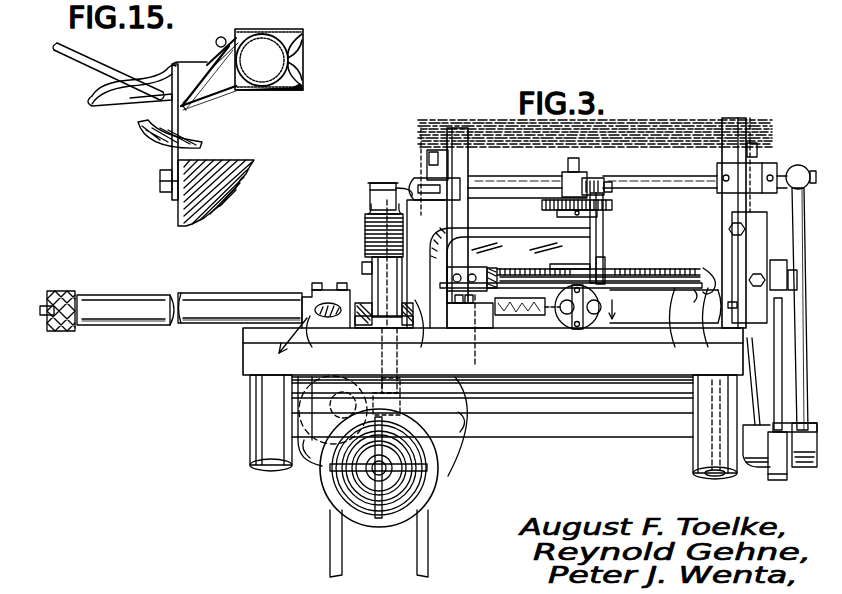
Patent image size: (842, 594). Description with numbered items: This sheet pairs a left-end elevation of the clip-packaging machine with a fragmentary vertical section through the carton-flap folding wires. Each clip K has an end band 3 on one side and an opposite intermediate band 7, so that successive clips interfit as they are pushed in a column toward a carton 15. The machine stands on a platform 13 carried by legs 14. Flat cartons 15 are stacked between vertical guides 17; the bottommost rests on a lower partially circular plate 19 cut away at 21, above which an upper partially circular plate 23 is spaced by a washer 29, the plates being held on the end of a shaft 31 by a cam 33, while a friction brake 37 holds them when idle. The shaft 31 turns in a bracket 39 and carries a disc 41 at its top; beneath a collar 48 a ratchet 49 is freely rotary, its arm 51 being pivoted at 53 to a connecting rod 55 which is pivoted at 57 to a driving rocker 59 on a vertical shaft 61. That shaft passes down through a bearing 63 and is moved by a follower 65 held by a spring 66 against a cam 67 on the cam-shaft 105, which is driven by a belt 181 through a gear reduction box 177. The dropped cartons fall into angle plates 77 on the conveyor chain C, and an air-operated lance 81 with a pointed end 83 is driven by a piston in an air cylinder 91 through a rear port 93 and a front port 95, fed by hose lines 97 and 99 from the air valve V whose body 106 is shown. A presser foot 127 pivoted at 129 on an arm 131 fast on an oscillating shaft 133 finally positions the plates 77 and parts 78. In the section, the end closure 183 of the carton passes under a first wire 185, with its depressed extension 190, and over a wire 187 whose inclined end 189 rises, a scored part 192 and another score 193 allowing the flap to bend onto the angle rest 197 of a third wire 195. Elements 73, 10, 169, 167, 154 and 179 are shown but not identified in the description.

In FIG. 15, the clip K is at (274, 36).
In FIG. 15, the intermediate band 7 is at (262, 60).
In FIG. 15, the end band 3 is at (300, 60).
In FIG. 15, the carton 15 is at (296, 91).
In FIG. 3, the carton 15 is at (680, 118).
In FIG. 15, the end closure 183 is at (233, 40).
In FIG. 15, the angle rest 197 is at (216, 40).
In FIG. 15, the depressed extension 190 is at (199, 95).
In FIG. 15, the score 193 is at (238, 90).
In FIG. 15, the first wire 185 is at (85, 63).
In FIG. 15, the inclined end 189 is at (156, 72).
In FIG. 15, the wire 187 is at (96, 102).
In FIG. 15, the third wire 195 is at (150, 104).
In FIG. 15, the scored part 192 is at (180, 110).
In FIG. 15, the platform 13 is at (216, 186).
In FIG. 3, the platform 13 is at (252, 338).
In FIG. 3, the vertical guides 17 is at (458, 136).
In FIG. 3, the pivot 57 is at (426, 175).
In FIG. 3, the driving rocker 59 is at (416, 184).
In FIG. 3, the vertical shaft 61 is at (383, 182).
In FIG. 3, the spring 66 is at (365, 228).
In FIG. 3, the bearing 63 is at (376, 287).
In FIG. 3, the bracket 39 is at (449, 241).
In FIG. 3, the friction brake 37 is at (487, 270).
In FIG. 3, the connecting rod 55 is at (498, 189).
In FIG. 3, the shaft 73 is at (663, 176).
In FIG. 3, the shaft 31 is at (572, 158).
In FIG. 3, the collar 48 is at (564, 178).
In FIG. 3, the pivot 53 is at (598, 178).
In FIG. 3, the arm 51 is at (610, 190).
In FIG. 3, the ratchet 49 is at (545, 206).
In FIG. 3, the disc 41 is at (604, 206).
In FIG. 3, the upper partially circular plate 23 is at (672, 269).
In FIG. 3, the cut-away portion 21 is at (648, 277).
In FIG. 3, the cam 33 is at (604, 281).
In FIG. 3, the washer 29 is at (605, 268).
In FIG. 3, the lower partially circular plate 19 is at (708, 274).
In FIG. 3, the valve body 106 is at (556, 320).
In FIG. 3, the section line 10 is at (530, 323).
In FIG. 3, the lever 169 is at (792, 232).
In FIG. 3, the link 167 is at (786, 280).
In FIG. 3, the arm 131 is at (800, 470).
In FIG. 3, the pivot 129 is at (770, 479).
In FIG. 3, the link 154 is at (795, 378).
In FIG. 3, the part 78 is at (670, 330).
In FIG. 3, the presser foot 127 is at (702, 330).
In FIG. 3, the air-operated lance 81 is at (332, 284).
In FIG. 3, the hose line 99 is at (314, 304).
In FIG. 3, the front port 95 is at (314, 346).
In FIG. 3, the air valve V is at (284, 342).
In FIG. 3, the pointed end 83 is at (420, 346).
In FIG. 3, the air cylinder 91 is at (149, 311).
In FIG. 3, the rear port 93 is at (60, 332).
In FIG. 3, the hose line 97 is at (50, 305).
In FIG. 3, the cam-shaft 105 is at (318, 380).
In FIG. 3, the follower 65 is at (400, 388).
In FIG. 3, the legs 14 is at (258, 452).
In FIG. 3, the angle plates 77 is at (549, 409).
In FIG. 3, the conveyor chain C is at (602, 411).
In FIG. 3, the oscillating shaft 133 is at (646, 440).
In FIG. 3, the gear reduction box 177 is at (450, 456).
In FIG. 3, the cam 67 is at (308, 454).
In FIG. 3, the drum 179 is at (373, 524).
In FIG. 3, the belt 181 is at (328, 549).